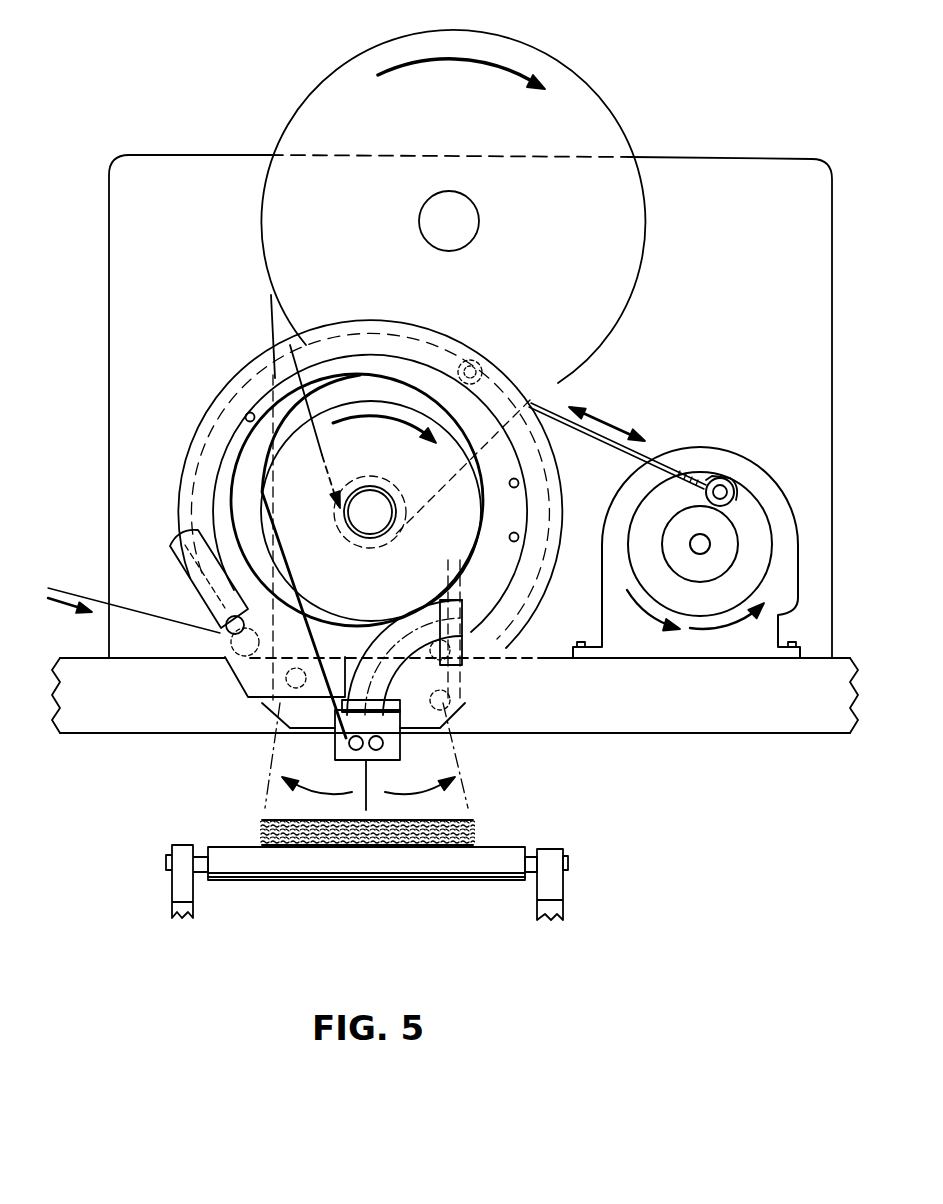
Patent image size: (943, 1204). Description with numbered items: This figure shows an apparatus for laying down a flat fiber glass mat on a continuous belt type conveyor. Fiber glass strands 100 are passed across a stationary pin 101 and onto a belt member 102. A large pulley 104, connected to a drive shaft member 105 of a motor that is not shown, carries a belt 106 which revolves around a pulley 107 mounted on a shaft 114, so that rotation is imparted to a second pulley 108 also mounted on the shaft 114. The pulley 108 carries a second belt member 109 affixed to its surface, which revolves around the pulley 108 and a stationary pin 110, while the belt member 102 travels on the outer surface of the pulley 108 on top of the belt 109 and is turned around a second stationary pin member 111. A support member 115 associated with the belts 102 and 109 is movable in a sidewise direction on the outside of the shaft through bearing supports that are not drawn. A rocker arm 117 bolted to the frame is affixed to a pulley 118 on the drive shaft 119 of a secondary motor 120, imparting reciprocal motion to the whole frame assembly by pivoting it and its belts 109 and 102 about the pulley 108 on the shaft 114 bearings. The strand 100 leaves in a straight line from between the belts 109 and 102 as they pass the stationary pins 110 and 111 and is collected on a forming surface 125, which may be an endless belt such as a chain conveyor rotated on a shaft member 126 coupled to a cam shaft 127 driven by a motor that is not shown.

The fiber glass strands 100 is at (78, 593).
The stationary pin 101 is at (223, 655).
The belt member 102 is at (203, 612).
The large pulley 104 is at (622, 276).
The drive shaft member 105 is at (462, 243).
The belt 106 is at (550, 392).
The pulley 107 is at (402, 495).
The second pulley 108 is at (397, 587).
The second belt member 109 is at (318, 665).
The stationary pin 110 is at (352, 746).
The second stationary pin member 111 is at (445, 749).
The shaft 114 is at (362, 518).
The support member 115 is at (232, 455).
The rocker arm 117 is at (630, 455).
The pulley 118 is at (750, 490).
The drive shaft 119 is at (692, 547).
The secondary motor 120 is at (780, 490).
The forming surface 125 is at (508, 852).
The shaft member 126 is at (568, 862).
The cam shaft 127 is at (565, 893).